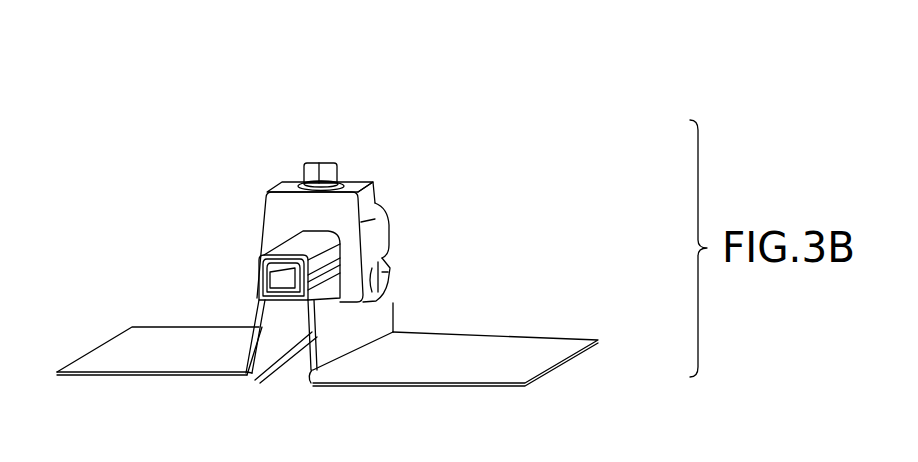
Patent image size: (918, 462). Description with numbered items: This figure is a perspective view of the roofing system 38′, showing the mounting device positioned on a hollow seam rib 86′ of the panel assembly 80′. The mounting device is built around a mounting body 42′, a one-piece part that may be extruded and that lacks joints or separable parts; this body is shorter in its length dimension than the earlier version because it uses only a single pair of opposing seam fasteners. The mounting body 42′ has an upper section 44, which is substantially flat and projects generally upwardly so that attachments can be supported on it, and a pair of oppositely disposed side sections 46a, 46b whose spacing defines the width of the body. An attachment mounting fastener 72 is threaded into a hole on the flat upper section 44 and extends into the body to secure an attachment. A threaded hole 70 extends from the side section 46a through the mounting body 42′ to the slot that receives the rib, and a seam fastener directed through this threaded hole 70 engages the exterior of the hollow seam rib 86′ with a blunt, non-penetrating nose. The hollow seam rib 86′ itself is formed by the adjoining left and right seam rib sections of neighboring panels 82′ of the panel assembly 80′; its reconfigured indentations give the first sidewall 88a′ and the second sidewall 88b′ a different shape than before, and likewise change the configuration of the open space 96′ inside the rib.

The roofing system 38′ is at (597, 189).
The panel assembly 80′ is at (558, 302).
The attachment mounting fastener 72 is at (323, 161).
The upper section 44 is at (292, 186).
The side section 46a is at (264, 213).
The mounting body 42′ is at (370, 216).
The side section 46b is at (368, 207).
The threaded hole 70 is at (373, 280).
The hollow seam rib 86′ is at (252, 322).
The first sidewall 88a′ is at (250, 345).
The second sidewall 88b′ is at (365, 313).
The panel 82′ is at (135, 352).
The open space 96′ is at (290, 355).